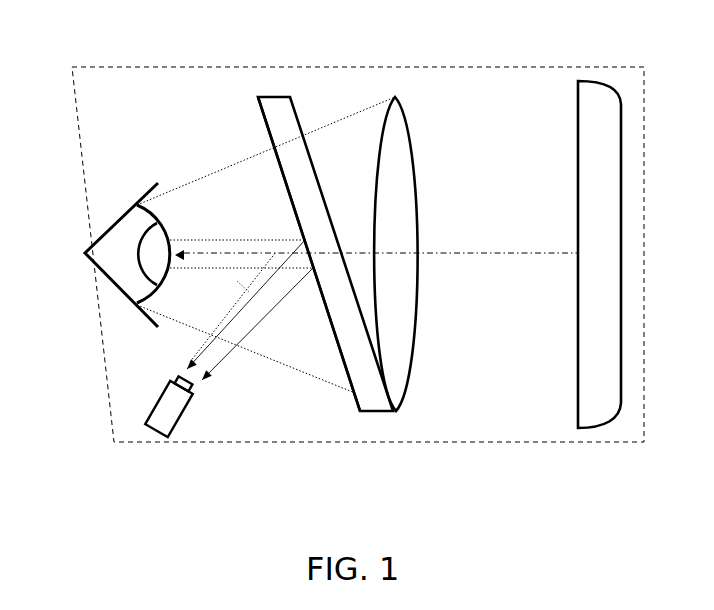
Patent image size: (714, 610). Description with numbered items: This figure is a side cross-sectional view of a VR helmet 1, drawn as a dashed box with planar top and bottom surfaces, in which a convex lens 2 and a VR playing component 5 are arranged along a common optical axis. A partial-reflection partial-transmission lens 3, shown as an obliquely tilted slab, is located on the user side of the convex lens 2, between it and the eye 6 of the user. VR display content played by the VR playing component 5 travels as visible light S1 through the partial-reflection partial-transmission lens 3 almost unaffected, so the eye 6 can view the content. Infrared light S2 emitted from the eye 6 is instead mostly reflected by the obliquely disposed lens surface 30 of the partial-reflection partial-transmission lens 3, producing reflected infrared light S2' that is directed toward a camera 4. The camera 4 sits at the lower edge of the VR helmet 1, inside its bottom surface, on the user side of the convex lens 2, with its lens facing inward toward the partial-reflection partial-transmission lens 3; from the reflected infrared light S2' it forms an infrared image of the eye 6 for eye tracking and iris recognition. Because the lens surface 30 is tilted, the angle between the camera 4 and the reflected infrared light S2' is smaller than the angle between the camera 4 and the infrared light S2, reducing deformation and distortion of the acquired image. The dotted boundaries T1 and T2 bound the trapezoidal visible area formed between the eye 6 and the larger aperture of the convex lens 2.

The VR helmet 1 is at (483, 67).
The convex lens 2 is at (397, 413).
The partial-reflection partial-transmission lens 3 is at (364, 414).
The lens surface 30 is at (258, 101).
The camera 4 is at (162, 420).
The VR playing component 5 is at (593, 412).
The eye 6 is at (118, 220).
The visible light S1 is at (480, 253).
The infrared light S2 is at (241, 227).
The reflected infrared light S2' is at (250, 329).
The upper boundary of field of view T1 is at (173, 190).
The lower boundary of field of view T2 is at (166, 322).